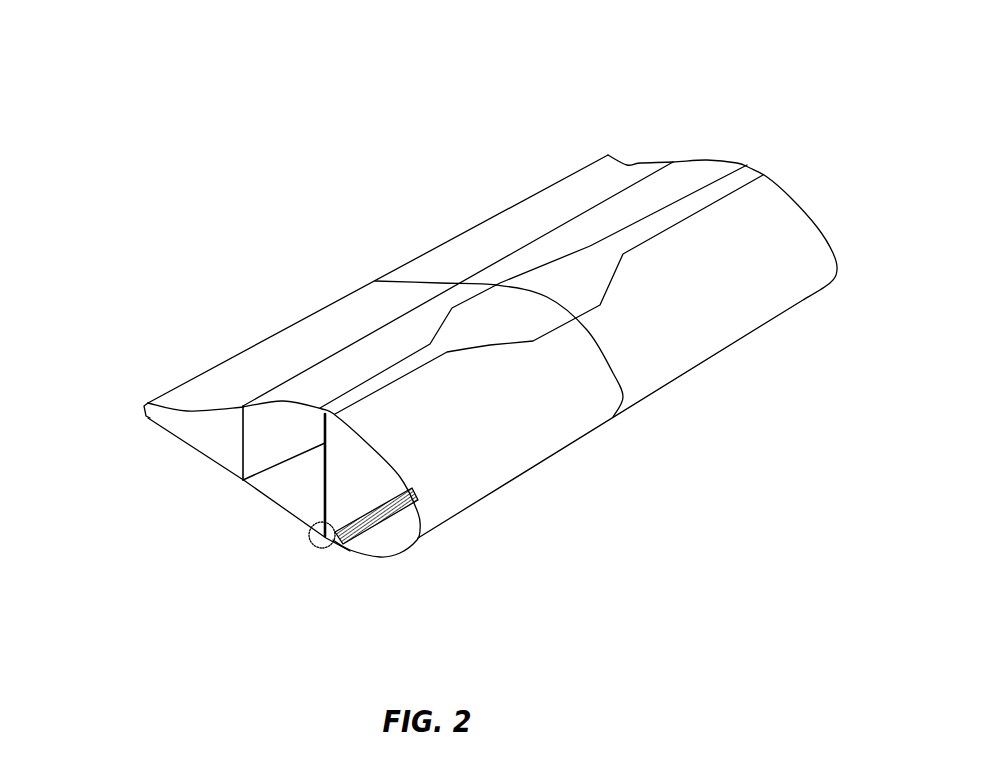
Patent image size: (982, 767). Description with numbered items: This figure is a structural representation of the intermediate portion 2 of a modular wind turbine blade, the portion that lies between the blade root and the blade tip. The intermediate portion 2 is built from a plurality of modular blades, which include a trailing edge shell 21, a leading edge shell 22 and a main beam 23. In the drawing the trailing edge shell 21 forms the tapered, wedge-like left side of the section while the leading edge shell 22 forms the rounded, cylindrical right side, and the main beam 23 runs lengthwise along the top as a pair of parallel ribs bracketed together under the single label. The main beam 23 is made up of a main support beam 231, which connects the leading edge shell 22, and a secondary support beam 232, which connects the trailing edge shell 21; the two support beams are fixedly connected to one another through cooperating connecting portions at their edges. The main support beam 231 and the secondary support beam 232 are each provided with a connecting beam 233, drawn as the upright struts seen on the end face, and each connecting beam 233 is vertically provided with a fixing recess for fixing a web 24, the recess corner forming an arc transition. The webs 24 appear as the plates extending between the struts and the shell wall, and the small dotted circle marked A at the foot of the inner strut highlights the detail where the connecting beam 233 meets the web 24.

The intermediate portion 2 is at (80, 182).
The trailing edge shell 21 is at (197, 397).
The leading edge shell 22 is at (543, 440).
The main beam 23 is at (313, 172).
The main support beam 231 is at (470, 325).
The secondary support beam 232 is at (302, 385).
The connecting beam 233 is at (245, 481).
The web 24 is at (257, 453).
The detail region A is at (328, 555).